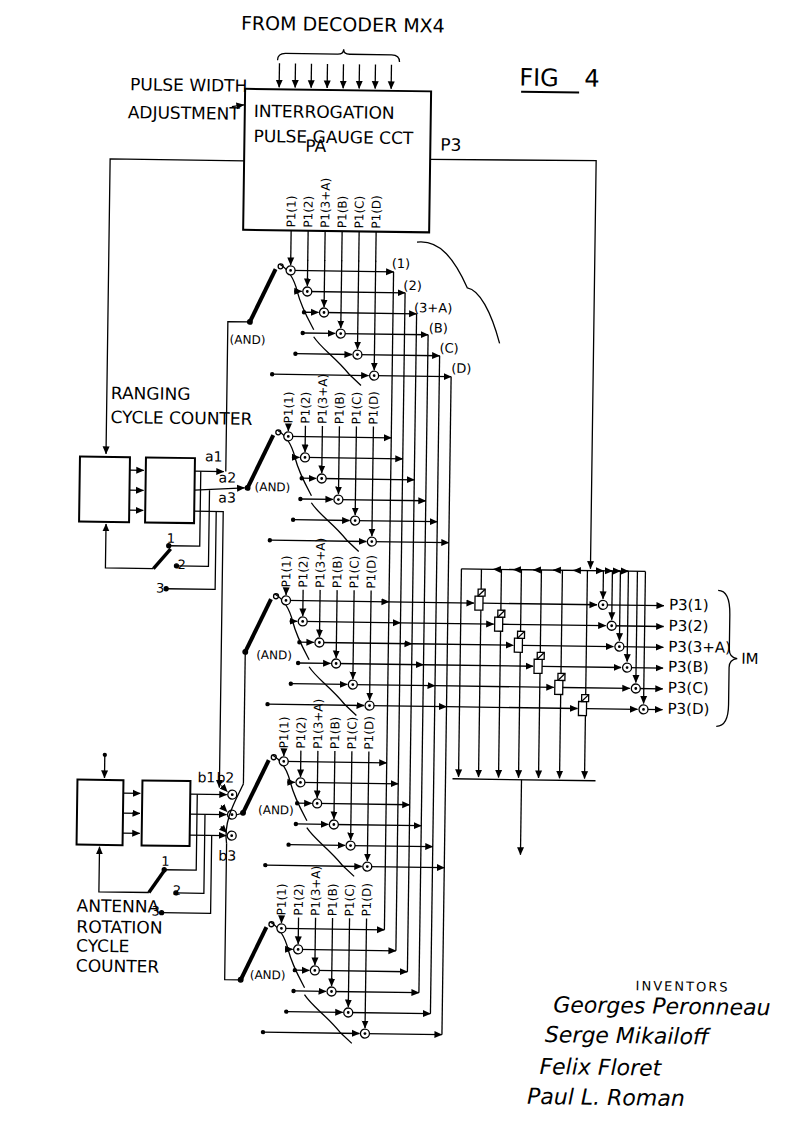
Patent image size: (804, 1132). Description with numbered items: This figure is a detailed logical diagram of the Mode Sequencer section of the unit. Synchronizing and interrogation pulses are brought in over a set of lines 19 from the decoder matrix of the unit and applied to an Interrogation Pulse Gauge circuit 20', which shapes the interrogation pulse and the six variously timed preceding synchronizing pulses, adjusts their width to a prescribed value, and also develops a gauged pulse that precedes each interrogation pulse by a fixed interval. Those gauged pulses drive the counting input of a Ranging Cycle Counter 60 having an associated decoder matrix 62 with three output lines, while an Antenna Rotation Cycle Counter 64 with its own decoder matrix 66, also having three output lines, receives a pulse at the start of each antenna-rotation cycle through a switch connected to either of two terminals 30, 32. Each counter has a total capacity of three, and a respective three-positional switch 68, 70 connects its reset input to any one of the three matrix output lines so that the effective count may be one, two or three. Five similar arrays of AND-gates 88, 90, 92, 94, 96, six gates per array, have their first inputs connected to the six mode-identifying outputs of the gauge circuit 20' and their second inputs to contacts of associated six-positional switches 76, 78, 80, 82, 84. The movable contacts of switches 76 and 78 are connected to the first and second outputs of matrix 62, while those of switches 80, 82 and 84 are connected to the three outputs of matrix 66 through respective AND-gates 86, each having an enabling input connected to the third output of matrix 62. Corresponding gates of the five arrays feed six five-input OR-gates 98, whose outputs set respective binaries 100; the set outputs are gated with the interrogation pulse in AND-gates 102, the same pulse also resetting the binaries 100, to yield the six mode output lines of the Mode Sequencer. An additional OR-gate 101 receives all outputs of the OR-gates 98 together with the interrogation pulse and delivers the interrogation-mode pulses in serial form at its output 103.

The set of lines 19 is at (336, 54).
The Interrogation Pulse Gauge circuit 20' is at (355, 161).
The terminal 30 is at (107, 759).
The terminal 32 is at (108, 759).
The Ranging Cycle Counter 60 is at (108, 460).
The decoder matrix 62 is at (148, 460).
The Antenna Rotation Cycle Counter 64 is at (96, 784).
The decoder matrix 66 is at (160, 784).
The three-positional switch 68 is at (152, 571).
The three-positional switch 70 is at (153, 894).
The six-positional switch 76 is at (261, 296).
The six-positional switch 78 is at (263, 451).
The six-positional switch 80 is at (264, 620).
The six-positional switch 82 is at (266, 780).
The six-positional switch 84 is at (266, 952).
The AND-gate 86 is at (248, 820).
The array of AND-gates 88 is at (297, 339).
The array of AND-gates 90 is at (298, 505).
The array of AND-gates 92 is at (294, 670).
The array of AND-gates 94 is at (303, 829).
The array of AND-gates 96 is at (300, 998).
The five-input OR-gate 98 is at (477, 293).
The binaries 100 is at (474, 562).
The OR-gate 101 is at (580, 780).
The AND-gate 102 is at (638, 720).
The output 103 is at (524, 818).